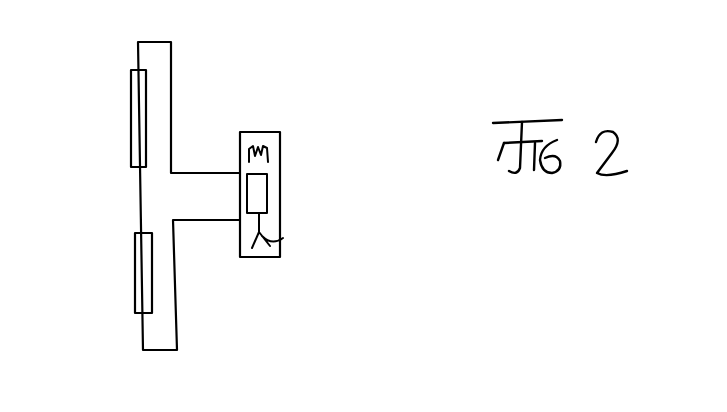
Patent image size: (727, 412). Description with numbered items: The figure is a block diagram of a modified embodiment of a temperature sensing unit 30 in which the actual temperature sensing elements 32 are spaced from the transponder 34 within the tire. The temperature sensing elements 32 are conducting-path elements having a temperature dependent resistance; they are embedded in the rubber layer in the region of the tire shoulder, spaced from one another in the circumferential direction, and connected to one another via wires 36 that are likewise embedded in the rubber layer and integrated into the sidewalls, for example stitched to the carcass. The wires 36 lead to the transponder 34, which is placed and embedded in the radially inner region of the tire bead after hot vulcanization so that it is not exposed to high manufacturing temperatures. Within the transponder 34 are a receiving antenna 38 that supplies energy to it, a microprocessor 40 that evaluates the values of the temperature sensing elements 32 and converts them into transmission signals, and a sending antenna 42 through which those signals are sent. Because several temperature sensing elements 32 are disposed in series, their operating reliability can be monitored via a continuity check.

The temperature sensing unit 30 is at (202, 188).
The temperature sensing element 32 is at (140, 121).
The transponder 34 is at (287, 190).
The wires 36 is at (177, 308).
The receiving antenna 38 is at (272, 152).
The microprocessor 40 is at (249, 198).
The sending antenna 42 is at (283, 238).